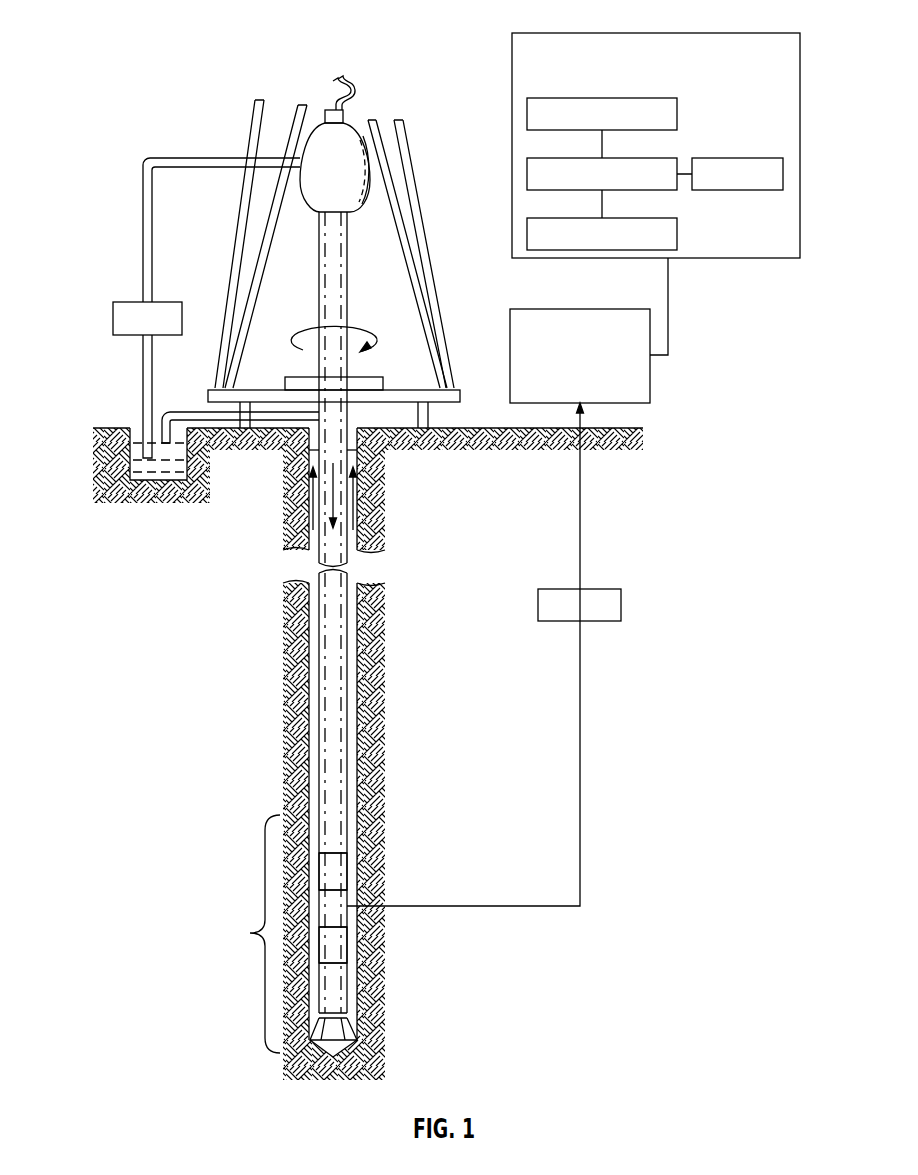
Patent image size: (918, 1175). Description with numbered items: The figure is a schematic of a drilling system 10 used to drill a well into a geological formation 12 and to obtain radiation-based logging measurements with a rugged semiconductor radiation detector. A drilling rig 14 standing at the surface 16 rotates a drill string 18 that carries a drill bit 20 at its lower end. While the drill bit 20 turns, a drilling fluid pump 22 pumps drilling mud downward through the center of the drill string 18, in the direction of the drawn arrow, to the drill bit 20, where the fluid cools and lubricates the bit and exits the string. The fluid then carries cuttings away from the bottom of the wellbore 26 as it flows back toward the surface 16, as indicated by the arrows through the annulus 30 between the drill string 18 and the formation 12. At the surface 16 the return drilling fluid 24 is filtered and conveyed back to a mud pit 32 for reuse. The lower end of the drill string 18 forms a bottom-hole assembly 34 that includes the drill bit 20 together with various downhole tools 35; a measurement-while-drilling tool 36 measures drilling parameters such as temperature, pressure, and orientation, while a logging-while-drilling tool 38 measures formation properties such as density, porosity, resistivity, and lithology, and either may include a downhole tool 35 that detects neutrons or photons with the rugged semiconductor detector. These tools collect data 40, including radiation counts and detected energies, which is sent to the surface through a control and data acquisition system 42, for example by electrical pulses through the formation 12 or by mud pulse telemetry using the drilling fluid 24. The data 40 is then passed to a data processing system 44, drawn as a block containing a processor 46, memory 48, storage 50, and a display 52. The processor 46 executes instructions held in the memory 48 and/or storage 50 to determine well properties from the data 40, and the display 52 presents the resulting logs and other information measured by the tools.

The drilling system 10 is at (441, 110).
The geological formation 12 is at (476, 668).
The drilling rig 14 is at (429, 183).
The surface 16 is at (489, 417).
The drill string 18 is at (332, 403).
The drill bit 20 is at (338, 1037).
The drilling fluid pump 22 is at (130, 300).
The return drilling fluid 24 is at (313, 484).
The wellbore 26 is at (298, 752).
The annulus 30 is at (356, 440).
The mud pit 32 is at (165, 478).
The bottom-hole assembly 34 is at (250, 934).
The downhole tool 35 is at (338, 918).
The measurement-while-drilling tool 36 is at (338, 862).
The logging-while-drilling tool 38 is at (338, 952).
The data 40 is at (567, 589).
The control and data acquisition system 42 is at (543, 309).
The data processing system 44 is at (543, 33).
The processor 46 is at (562, 158).
The memory 48 is at (562, 98).
The storage 50 is at (562, 218).
The display 52 is at (728, 158).